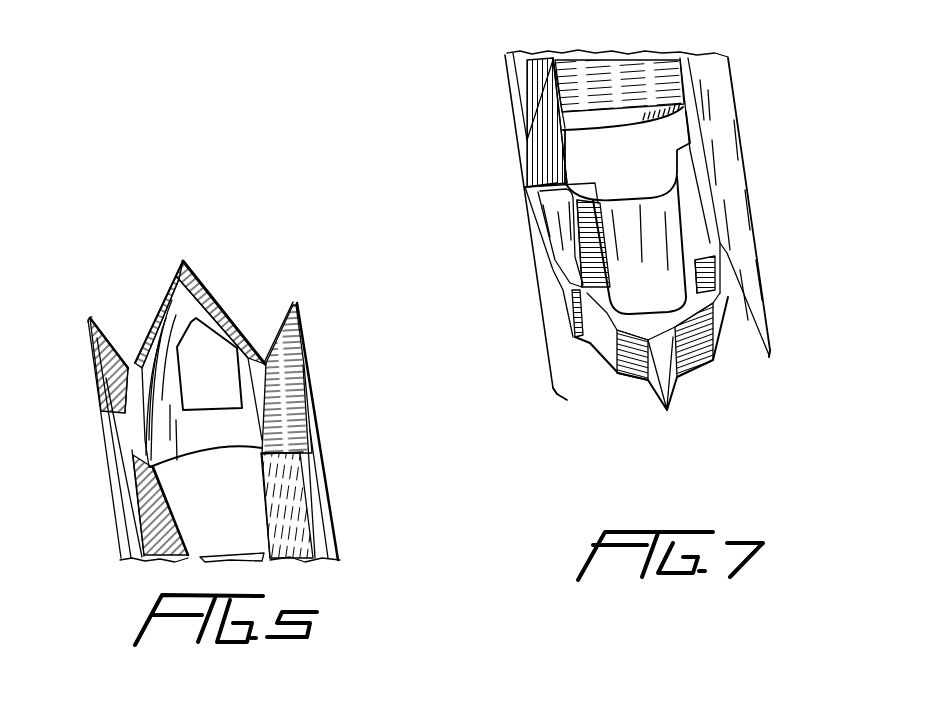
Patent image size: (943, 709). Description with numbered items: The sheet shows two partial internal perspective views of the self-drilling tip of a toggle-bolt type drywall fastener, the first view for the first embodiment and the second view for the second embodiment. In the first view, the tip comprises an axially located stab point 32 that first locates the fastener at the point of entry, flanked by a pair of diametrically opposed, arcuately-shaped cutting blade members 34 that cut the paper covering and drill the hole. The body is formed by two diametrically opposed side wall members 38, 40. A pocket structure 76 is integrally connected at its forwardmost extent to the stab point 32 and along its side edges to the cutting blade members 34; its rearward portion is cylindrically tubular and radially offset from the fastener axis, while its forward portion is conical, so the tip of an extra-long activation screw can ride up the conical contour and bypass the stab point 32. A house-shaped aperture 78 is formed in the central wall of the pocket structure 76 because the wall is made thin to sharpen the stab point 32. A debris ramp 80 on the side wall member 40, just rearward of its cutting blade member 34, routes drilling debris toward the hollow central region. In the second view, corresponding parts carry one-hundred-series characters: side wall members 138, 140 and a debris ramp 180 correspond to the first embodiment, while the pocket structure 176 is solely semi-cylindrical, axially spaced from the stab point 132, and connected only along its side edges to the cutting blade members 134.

In FIG. 5, the stab point 32 is at (182, 261).
In FIG. 5, the cutting blade members 34 is at (90, 317).
In FIG. 5, the side wall member 38 is at (112, 527).
In FIG. 5, the side wall member 40 is at (313, 535).
In FIG. 5, the pocket structure 76 is at (202, 447).
In FIG. 5, the aperture 78 is at (207, 363).
In FIG. 5, the debris ramp 80 is at (285, 490).
In FIG. 7, the stab point 132 is at (667, 410).
In FIG. 7, the cutting blade members 134 is at (560, 392).
In FIG. 7, the side wall 138 is at (720, 163).
In FIG. 7, the side wall 140 is at (522, 74).
In FIG. 7, the pocket structure 176 is at (633, 230).
In FIG. 7, the rib 180 is at (537, 145).